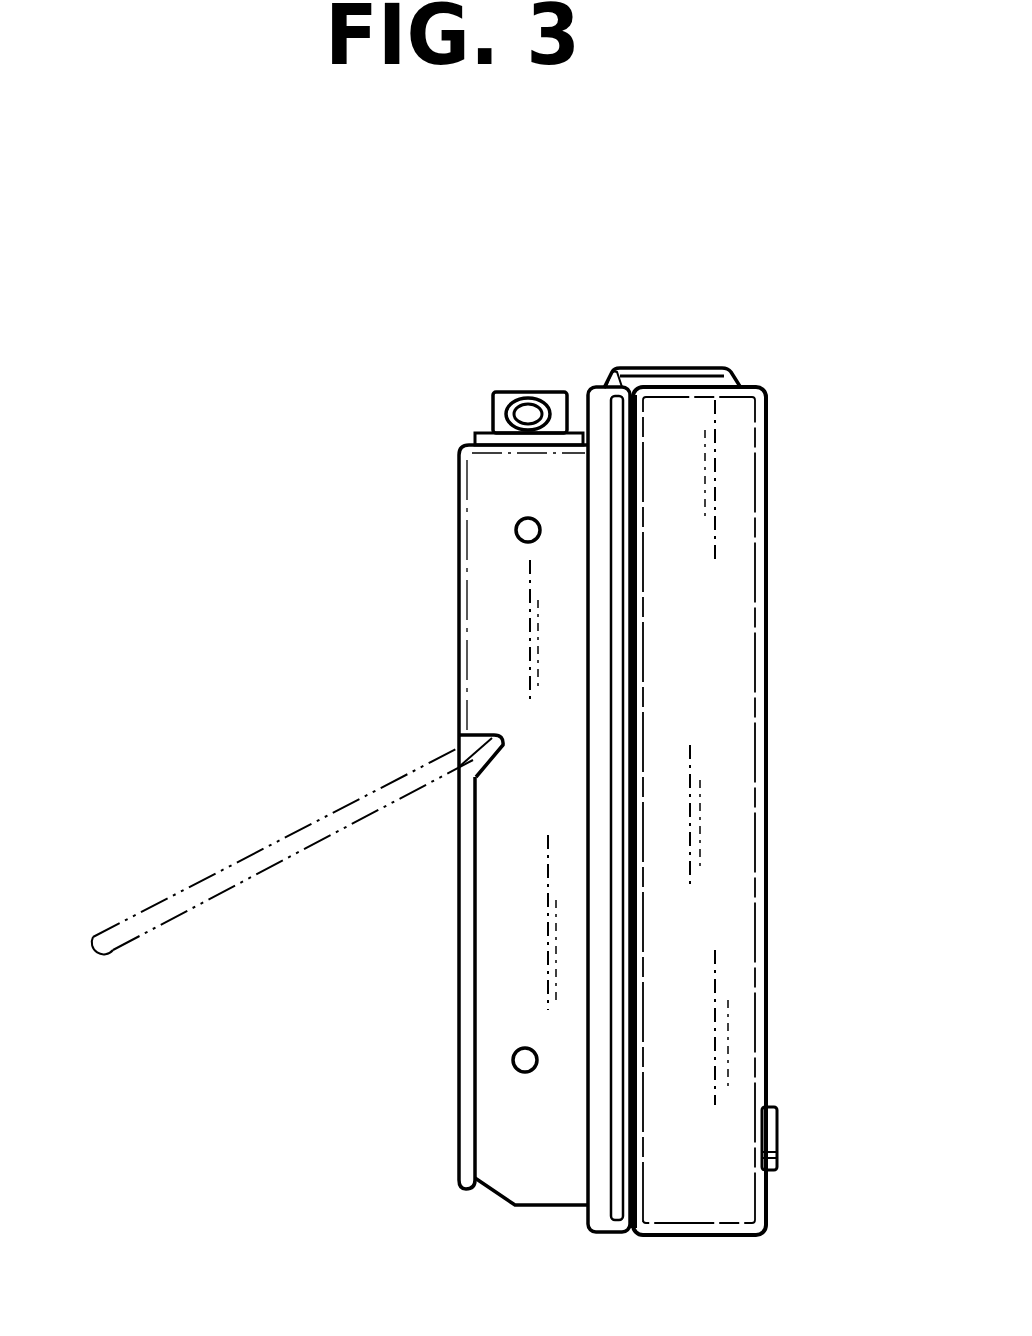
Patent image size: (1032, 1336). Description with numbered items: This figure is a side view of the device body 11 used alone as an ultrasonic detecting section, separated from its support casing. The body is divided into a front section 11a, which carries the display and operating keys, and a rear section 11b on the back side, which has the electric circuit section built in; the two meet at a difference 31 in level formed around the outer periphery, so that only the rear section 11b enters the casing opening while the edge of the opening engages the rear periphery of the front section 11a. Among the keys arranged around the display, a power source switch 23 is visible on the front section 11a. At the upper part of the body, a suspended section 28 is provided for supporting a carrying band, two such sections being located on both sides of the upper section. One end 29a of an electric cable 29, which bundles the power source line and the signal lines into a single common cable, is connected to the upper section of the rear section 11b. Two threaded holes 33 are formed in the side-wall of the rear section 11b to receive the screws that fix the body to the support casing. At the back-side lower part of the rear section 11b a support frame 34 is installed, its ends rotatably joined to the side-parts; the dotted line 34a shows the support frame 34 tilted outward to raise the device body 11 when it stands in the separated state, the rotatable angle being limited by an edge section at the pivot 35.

The device body 11 is at (602, 354).
The front section 11a is at (741, 494).
The rear section 11b is at (486, 483).
The power source switch 23 is at (778, 1126).
The suspended section 28 is at (686, 367).
The electric cable 29 is at (492, 410).
The one end of electric cable 29a is at (515, 393).
The difference in level 31 is at (585, 1213).
The threaded hole 33 is at (516, 535).
The support frame 34 is at (458, 940).
The dotted line (tilted support frame) 34a is at (173, 892).
The hinge portion 35 is at (447, 748).